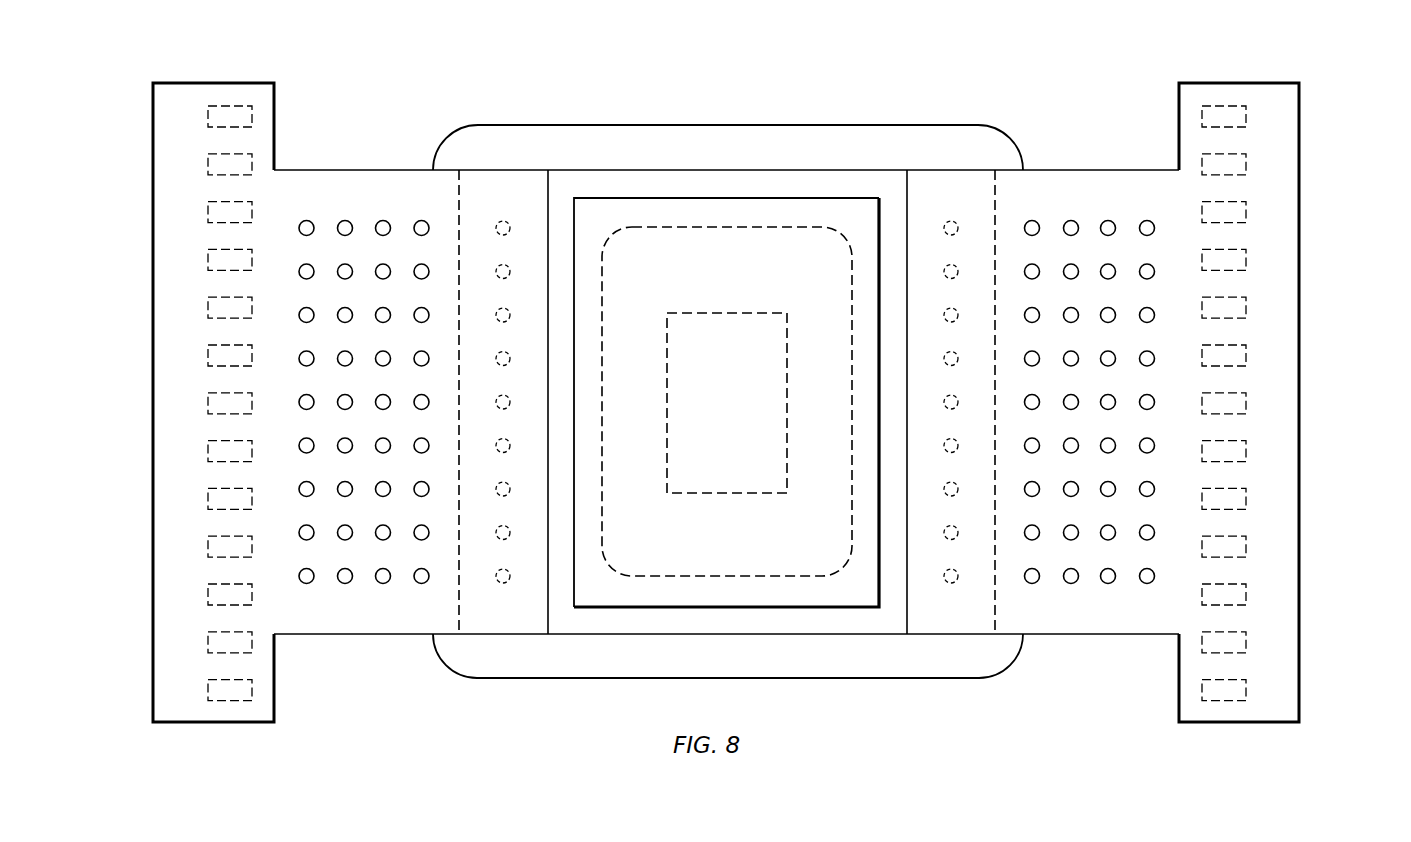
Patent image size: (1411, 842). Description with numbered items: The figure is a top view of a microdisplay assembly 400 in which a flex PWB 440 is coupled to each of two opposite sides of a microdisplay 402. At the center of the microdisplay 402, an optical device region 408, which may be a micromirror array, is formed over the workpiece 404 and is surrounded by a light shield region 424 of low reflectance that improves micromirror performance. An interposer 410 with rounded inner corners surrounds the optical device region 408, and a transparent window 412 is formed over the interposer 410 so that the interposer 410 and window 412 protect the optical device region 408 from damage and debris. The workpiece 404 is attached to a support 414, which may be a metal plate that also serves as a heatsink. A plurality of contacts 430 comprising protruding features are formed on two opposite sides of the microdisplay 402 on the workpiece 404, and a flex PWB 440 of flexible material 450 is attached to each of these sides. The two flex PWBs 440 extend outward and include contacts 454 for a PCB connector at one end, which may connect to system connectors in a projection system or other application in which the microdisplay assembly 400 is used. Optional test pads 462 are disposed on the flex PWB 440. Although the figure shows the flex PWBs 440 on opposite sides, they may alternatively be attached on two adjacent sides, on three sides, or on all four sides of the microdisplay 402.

The microdisplay assembly 400 is at (545, 77).
The microdisplay 402 is at (613, 150).
The workpiece 404 is at (735, 178).
The optical device region 408 is at (725, 325).
The interposer 410 is at (742, 343).
The window 412 is at (820, 207).
The support 414 is at (678, 132).
The light shield region 424 is at (783, 548).
The contacts 430 is at (497, 228).
The flex PWB 440 is at (130, 526).
The flexible material 450 is at (153, 356).
The contacts for a PCB connector 454 is at (230, 117).
The test pads 462 is at (385, 225).